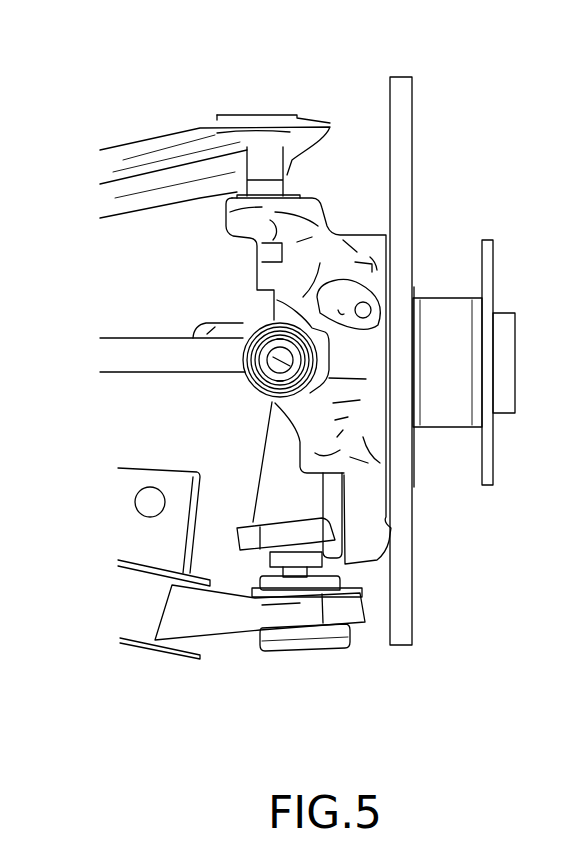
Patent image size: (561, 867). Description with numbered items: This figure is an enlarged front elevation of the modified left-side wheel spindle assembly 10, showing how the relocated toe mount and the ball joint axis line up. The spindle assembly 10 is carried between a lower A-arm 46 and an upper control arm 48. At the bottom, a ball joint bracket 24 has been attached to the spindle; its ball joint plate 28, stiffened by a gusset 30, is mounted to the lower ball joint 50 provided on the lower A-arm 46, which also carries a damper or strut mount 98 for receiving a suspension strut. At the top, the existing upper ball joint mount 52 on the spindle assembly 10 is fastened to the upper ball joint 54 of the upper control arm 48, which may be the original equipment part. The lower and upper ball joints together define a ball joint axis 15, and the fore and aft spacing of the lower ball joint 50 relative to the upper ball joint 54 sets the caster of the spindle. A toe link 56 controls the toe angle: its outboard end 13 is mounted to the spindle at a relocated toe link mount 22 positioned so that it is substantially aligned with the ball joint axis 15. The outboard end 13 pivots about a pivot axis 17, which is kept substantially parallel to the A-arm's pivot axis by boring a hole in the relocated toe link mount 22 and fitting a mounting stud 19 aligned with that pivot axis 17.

The wheel spindle assembly 10 is at (458, 178).
The outboard end of toe link 13 is at (257, 394).
The ball joint axis 15 is at (268, 103).
The pivot axis 17 is at (366, 379).
The mounting stud 19 is at (252, 376).
The relocated toe link mount 22 is at (292, 315).
The ball joint bracket 24 is at (258, 479).
The ball joint plate 28 is at (238, 543).
The gusset 30 is at (253, 507).
The lower A-arm 46 is at (162, 651).
The upper control arm 48 is at (198, 131).
The lower ball joint 50 is at (340, 584).
The upper ball joint mount 52 is at (230, 227).
The upper ball joint 54 is at (290, 175).
The toe link 56 is at (124, 374).
The strut mount 98 is at (177, 467).